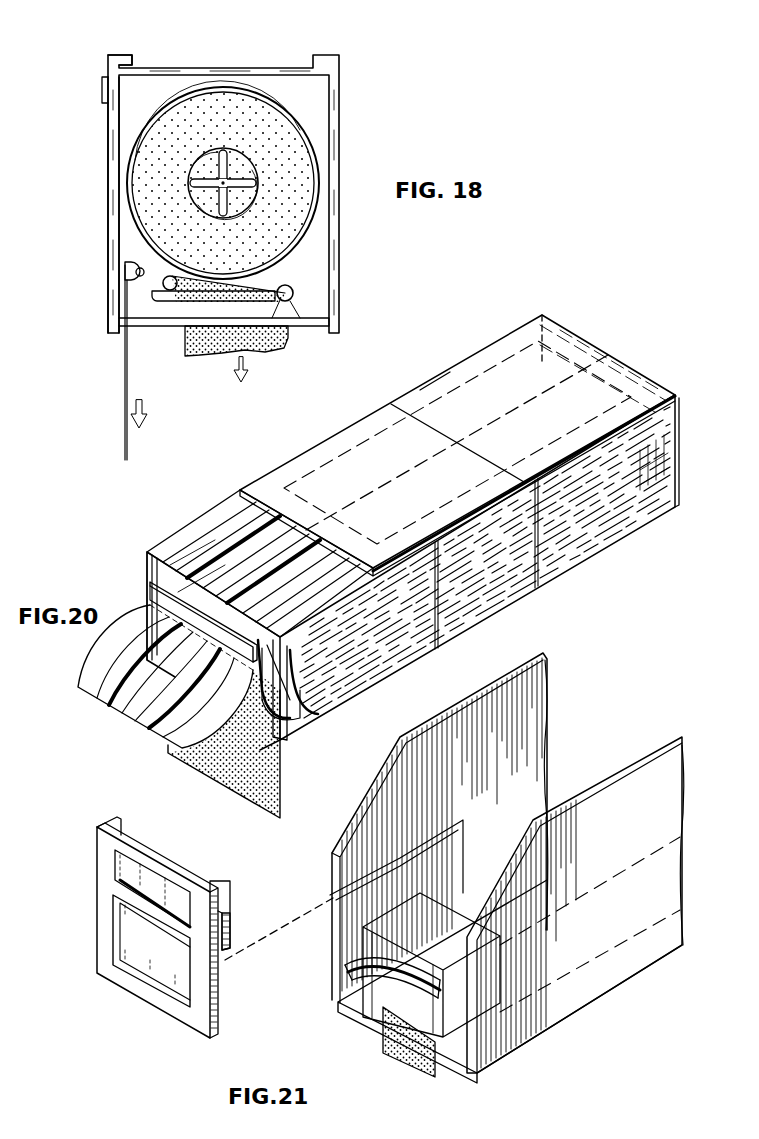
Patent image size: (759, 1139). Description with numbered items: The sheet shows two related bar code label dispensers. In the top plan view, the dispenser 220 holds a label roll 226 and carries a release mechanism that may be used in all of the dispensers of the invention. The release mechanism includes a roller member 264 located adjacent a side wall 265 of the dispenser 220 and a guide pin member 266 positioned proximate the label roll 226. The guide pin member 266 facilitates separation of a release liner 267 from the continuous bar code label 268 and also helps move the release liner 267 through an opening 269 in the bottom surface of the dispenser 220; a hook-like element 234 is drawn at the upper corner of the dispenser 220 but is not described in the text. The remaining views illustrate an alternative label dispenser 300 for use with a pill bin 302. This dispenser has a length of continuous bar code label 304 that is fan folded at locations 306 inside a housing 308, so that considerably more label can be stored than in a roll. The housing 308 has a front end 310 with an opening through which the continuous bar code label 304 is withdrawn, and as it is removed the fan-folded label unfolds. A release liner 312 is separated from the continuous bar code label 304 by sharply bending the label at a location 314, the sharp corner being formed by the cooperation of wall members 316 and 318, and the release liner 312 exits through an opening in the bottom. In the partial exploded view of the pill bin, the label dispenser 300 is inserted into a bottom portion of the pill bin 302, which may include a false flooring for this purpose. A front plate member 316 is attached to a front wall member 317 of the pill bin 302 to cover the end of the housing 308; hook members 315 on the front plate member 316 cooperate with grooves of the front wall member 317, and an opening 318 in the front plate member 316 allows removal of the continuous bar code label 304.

In FIG. 18, the dispenser 220 is at (231, 44).
In FIG. 18, the mounting hook 234 is at (121, 54).
In FIG. 18, the label roll 226 is at (302, 134).
In FIG. 18, the side wall 265 is at (107, 213).
In FIG. 18, the roller member 264 is at (134, 273).
In FIG. 18, the guide pin member 266 is at (167, 292).
In FIG. 18, the release liner 267 is at (211, 348).
In FIG. 18, the continuous bar code label 268 is at (128, 380).
In FIG. 18, the opening 269 is at (287, 301).
In FIG. 20, the label dispenser 300 is at (445, 350).
In FIG. 21, the pill bin 302 is at (542, 697).
In FIG. 20, the continuous bar code label 304 is at (86, 689).
In FIG. 21, the continuous bar code label 304 is at (342, 978).
In FIG. 20, the fan fold locations 306 is at (294, 702).
In FIG. 20, the housing 308 is at (336, 440).
In FIG. 20, the front end 310 is at (148, 600).
In FIG. 20, the release liner 312 is at (247, 792).
In FIG. 21, the release liner 312 is at (408, 1055).
In FIG. 20, the bending location 314 is at (291, 722).
In FIG. 21, the hook members 315 is at (228, 932).
In FIG. 20, the front plate member 316 is at (180, 549).
In FIG. 21, the front plate member 316 is at (110, 924).
In FIG. 21, the front wall member 317 is at (336, 936).
In FIG. 20, the opening 318 is at (200, 615).
In FIG. 21, the opening 318 is at (142, 962).